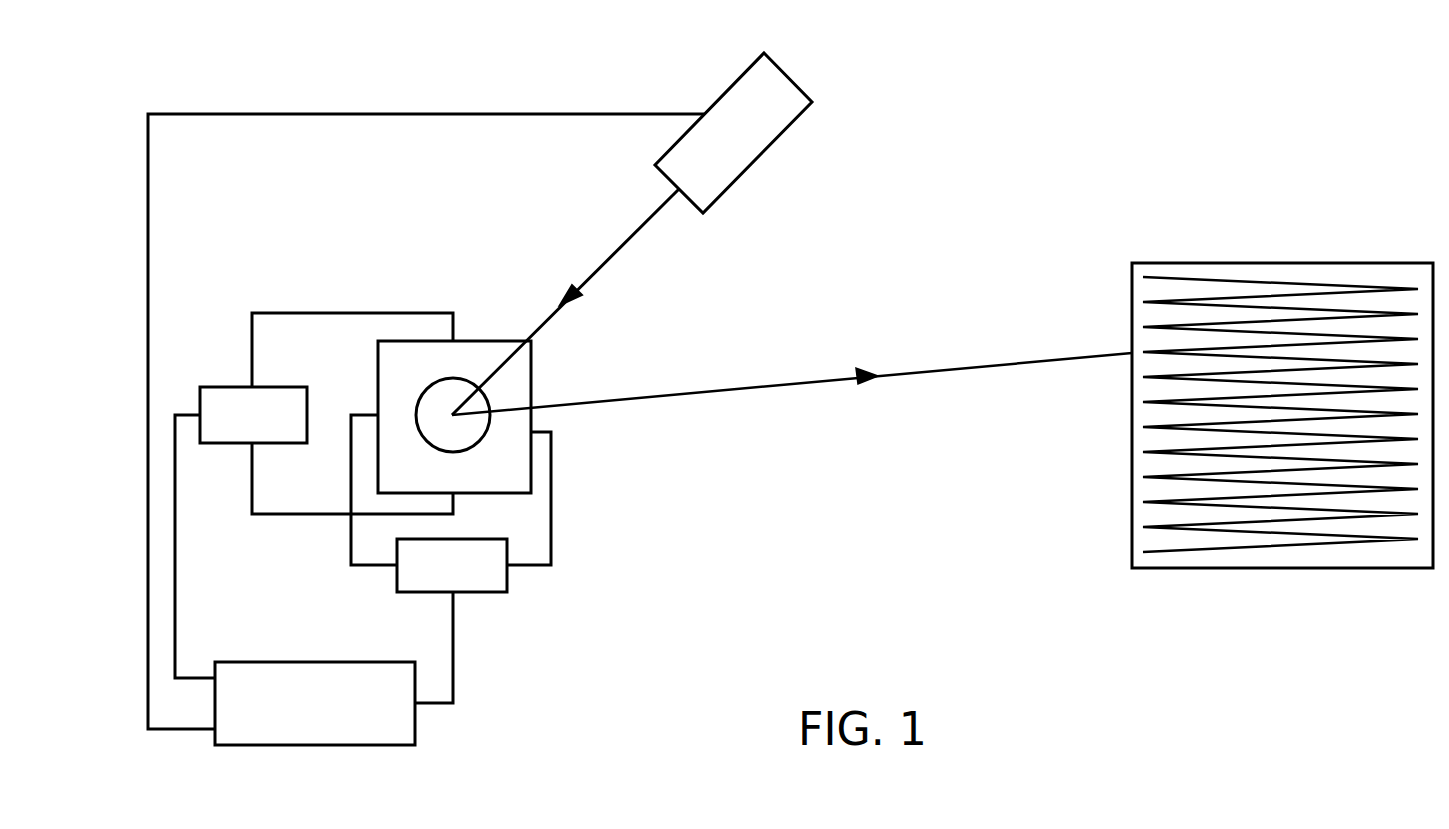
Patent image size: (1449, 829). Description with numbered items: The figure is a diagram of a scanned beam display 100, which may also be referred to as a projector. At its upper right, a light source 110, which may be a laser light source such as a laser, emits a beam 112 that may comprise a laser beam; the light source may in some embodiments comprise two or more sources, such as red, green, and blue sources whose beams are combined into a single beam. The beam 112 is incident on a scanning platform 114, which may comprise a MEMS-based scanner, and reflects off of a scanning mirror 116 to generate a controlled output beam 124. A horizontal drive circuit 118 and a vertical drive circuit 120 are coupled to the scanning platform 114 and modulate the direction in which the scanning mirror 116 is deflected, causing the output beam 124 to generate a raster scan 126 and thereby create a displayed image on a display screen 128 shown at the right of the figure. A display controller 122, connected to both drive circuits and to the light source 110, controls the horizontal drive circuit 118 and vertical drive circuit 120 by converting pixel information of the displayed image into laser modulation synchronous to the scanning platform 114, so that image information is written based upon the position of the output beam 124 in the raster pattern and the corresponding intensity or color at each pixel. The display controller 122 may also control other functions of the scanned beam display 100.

The scanned beam display 100 is at (1138, 119).
The light source 110 is at (792, 75).
The beam 112 is at (608, 258).
The scanning platform 114 is at (477, 341).
The scanning mirror 116 is at (480, 445).
The horizontal drive circuit 118 is at (231, 387).
The vertical drive circuit 120 is at (507, 584).
The display controller 122 is at (415, 733).
The output beam 124 is at (673, 396).
The raster scan 126 is at (1227, 279).
The display screen 128 is at (1132, 505).